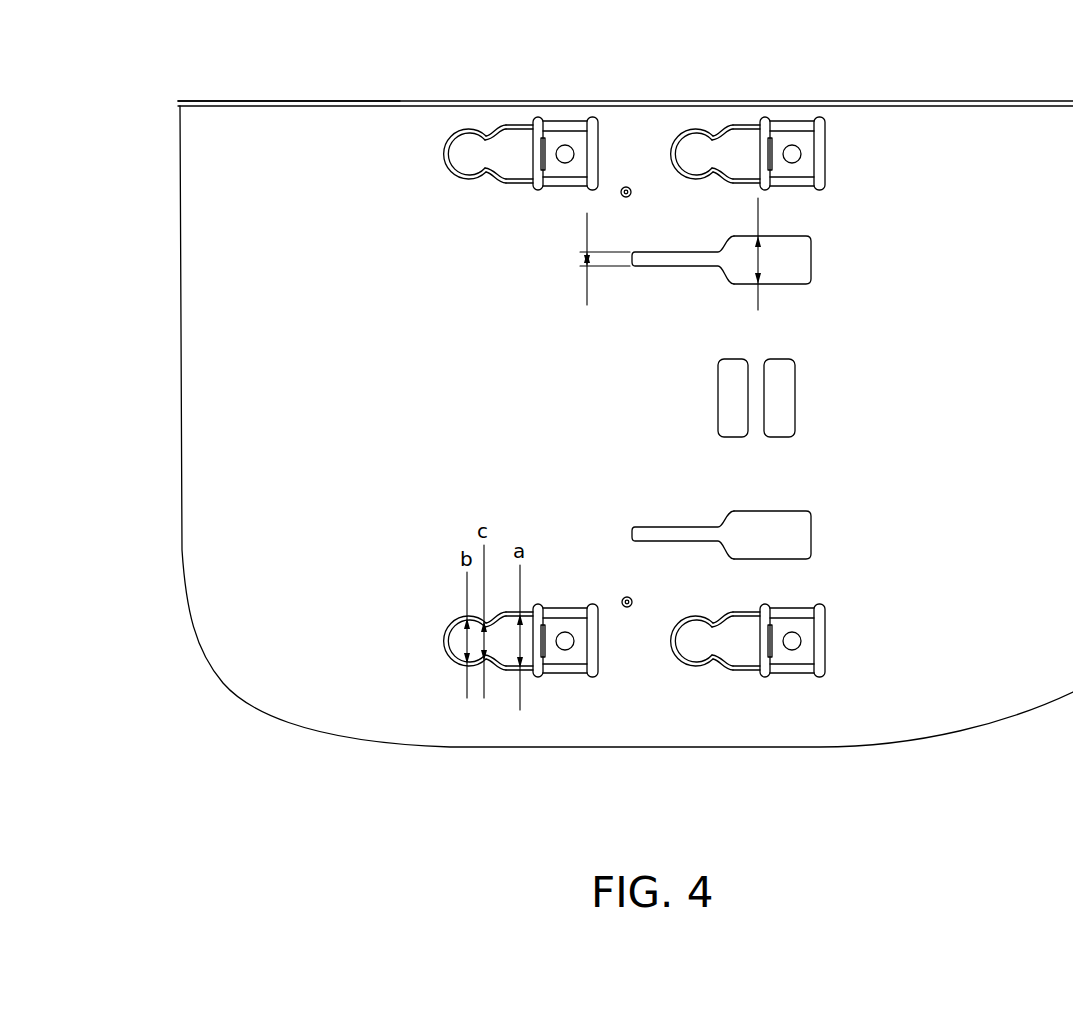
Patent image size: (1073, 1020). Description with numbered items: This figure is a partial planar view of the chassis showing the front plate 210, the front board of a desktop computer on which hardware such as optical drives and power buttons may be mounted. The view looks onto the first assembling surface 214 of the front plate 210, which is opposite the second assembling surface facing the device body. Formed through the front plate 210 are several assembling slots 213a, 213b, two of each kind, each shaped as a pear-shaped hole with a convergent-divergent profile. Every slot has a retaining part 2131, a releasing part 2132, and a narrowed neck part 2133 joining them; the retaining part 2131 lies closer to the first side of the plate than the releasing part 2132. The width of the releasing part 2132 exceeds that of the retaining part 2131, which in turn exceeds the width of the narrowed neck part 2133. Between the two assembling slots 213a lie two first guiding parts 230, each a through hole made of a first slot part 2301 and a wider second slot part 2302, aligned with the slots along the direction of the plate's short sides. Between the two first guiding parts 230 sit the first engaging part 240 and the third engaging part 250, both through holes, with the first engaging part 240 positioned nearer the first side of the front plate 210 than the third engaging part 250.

The front plate 210 is at (1012, 138).
The first assembling surface 214 is at (280, 150).
The assembling slot 213a is at (737, 156).
The assembling slot 213b is at (498, 156).
The retaining part 2131 is at (452, 655).
The releasing part 2132 is at (530, 652).
The narrowed neck part 2133 is at (493, 652).
The first guiding part 230 is at (768, 379).
The first slot part 2301 is at (678, 262).
The second slot part 2302 is at (786, 259).
The first engaging part 240 is at (726, 400).
The third engaging part 250 is at (789, 400).